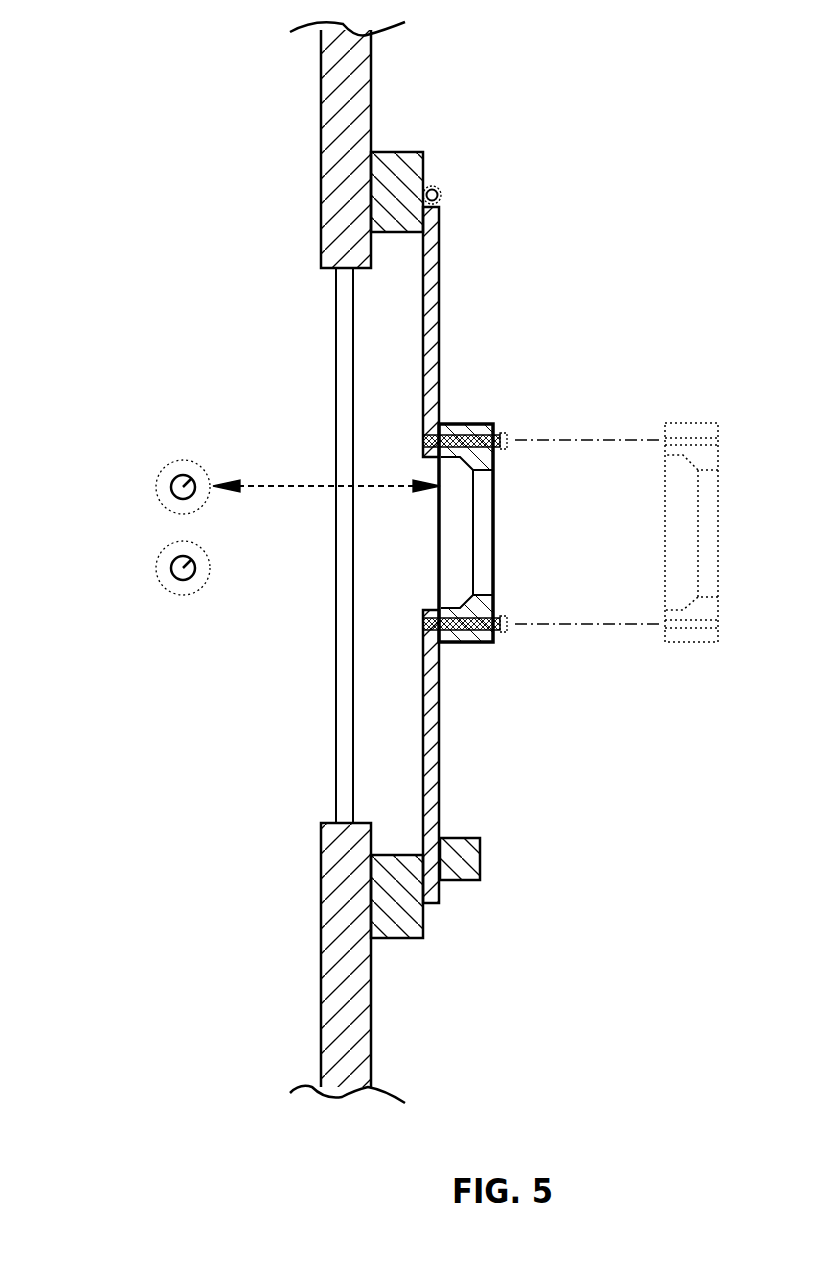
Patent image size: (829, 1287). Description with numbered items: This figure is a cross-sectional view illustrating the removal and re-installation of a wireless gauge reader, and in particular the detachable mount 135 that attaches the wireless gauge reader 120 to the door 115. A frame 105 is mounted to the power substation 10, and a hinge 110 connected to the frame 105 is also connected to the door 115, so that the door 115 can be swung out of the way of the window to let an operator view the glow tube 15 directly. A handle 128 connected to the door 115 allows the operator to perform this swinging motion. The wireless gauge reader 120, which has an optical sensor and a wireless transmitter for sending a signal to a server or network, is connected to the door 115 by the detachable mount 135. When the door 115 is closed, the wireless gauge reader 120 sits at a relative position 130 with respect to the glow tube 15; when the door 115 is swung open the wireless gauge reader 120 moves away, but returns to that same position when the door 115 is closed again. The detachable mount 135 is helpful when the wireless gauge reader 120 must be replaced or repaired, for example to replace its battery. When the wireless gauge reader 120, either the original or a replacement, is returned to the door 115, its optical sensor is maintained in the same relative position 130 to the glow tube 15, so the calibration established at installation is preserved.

The power substation 10 is at (352, 87).
The glow tube 15 is at (168, 493).
The frame 105 is at (390, 163).
The hinge 110 is at (438, 184).
The door 115 is at (424, 303).
The wireless gauge reader 120 is at (483, 565).
The handle 128 is at (463, 837).
The relative position 130 is at (297, 485).
The detachable mount 135 is at (492, 433).